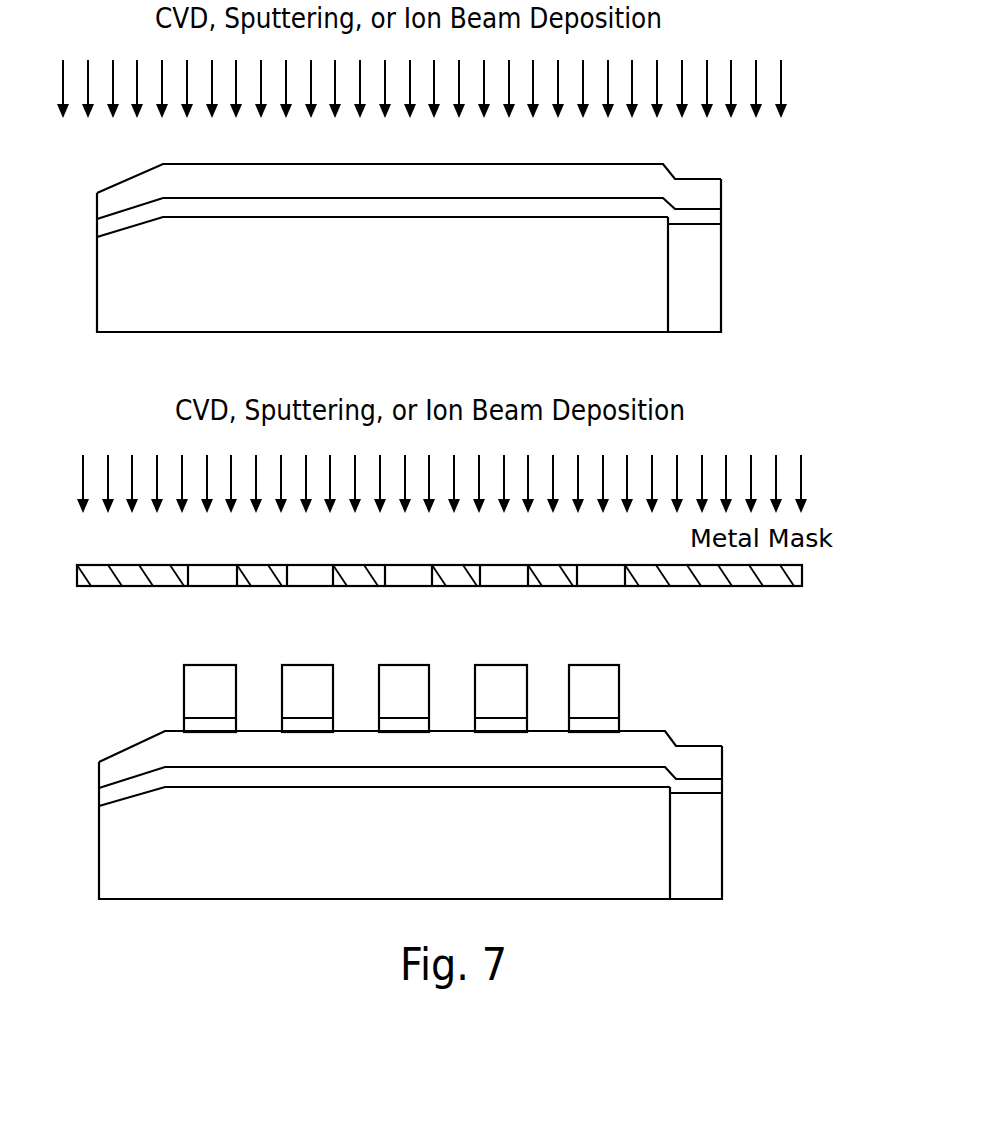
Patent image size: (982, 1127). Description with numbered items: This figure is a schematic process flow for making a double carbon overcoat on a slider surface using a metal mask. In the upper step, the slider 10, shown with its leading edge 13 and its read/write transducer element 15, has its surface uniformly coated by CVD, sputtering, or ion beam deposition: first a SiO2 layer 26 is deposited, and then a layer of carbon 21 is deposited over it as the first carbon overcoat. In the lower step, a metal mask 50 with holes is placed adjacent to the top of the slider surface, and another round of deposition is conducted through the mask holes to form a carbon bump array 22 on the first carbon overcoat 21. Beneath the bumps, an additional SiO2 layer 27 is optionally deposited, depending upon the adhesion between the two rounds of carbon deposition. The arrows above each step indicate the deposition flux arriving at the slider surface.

The slider 10 is at (409, 539).
The leading edge 13 is at (123, 233).
The read/write transducer element 15 is at (683, 225).
The layer of carbon 21 is at (699, 192).
The SiO2 layer 26 is at (700, 216).
The carbon bump array 22 is at (597, 688).
The additional SiO2 layer 27 is at (605, 726).
The metal mask 50 is at (439, 554).